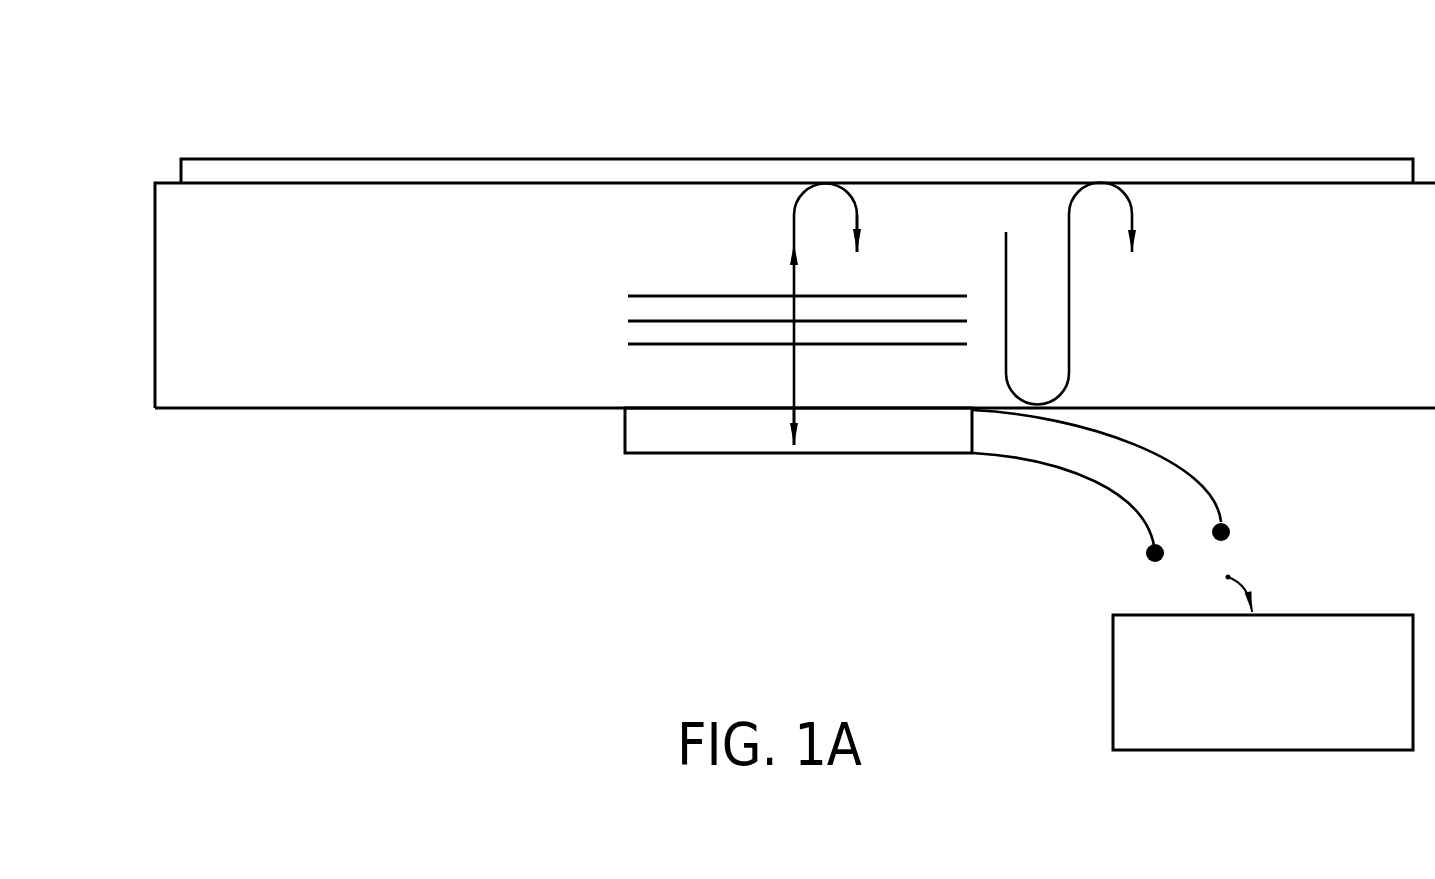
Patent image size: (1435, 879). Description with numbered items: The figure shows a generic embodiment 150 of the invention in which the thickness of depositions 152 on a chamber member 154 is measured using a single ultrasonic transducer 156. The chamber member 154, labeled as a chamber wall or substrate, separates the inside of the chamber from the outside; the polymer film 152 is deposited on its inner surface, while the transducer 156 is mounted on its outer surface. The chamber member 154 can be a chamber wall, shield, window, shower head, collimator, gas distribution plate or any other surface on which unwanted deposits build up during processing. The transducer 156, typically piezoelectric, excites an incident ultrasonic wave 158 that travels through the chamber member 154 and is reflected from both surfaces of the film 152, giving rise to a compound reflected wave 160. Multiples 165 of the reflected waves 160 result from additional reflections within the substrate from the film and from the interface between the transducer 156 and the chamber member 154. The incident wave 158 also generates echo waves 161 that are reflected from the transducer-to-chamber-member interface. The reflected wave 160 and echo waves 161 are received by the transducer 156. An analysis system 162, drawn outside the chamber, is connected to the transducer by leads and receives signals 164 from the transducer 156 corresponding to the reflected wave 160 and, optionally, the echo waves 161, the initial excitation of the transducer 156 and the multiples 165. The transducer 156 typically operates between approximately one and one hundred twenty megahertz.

The generic embodiment 150 is at (178, 78).
The depositions 152 is at (1218, 172).
The chamber member 154 is at (402, 367).
The ultrasonic transducer 156 is at (773, 456).
The incident ultrasonic wave 158 is at (792, 227).
The compound reflected wave 160 is at (858, 220).
The echo waves 161 is at (797, 413).
The analysis system 162 is at (1363, 615).
The signals 164 is at (1232, 540).
The multiples 165 is at (1135, 215).